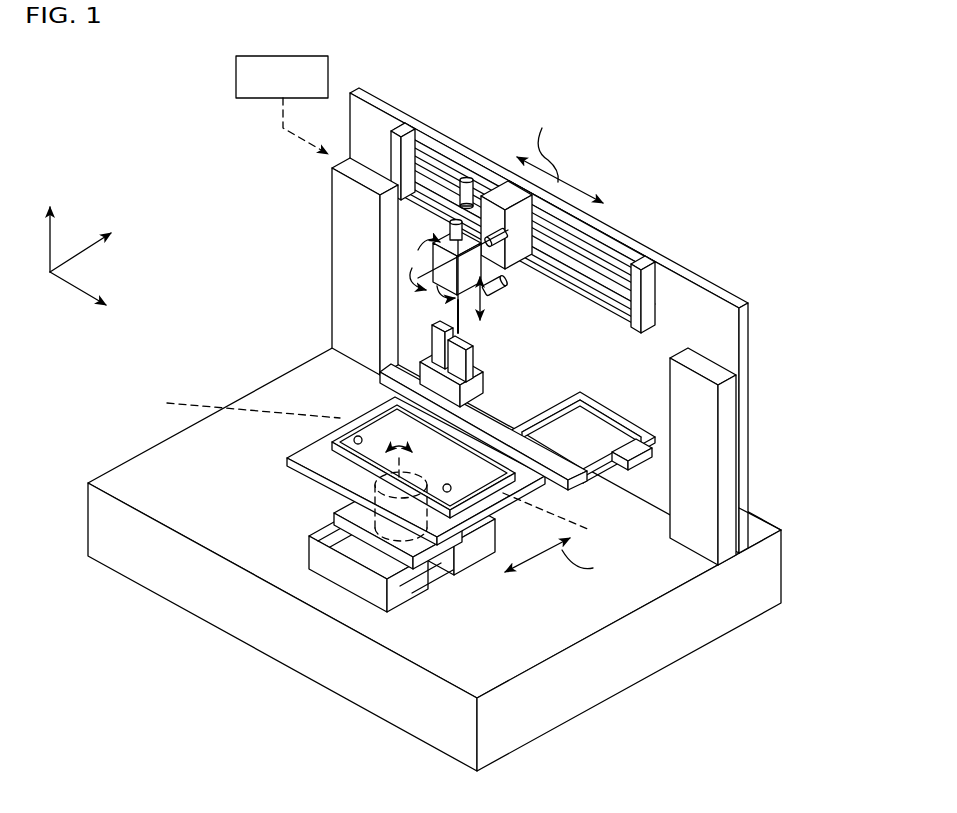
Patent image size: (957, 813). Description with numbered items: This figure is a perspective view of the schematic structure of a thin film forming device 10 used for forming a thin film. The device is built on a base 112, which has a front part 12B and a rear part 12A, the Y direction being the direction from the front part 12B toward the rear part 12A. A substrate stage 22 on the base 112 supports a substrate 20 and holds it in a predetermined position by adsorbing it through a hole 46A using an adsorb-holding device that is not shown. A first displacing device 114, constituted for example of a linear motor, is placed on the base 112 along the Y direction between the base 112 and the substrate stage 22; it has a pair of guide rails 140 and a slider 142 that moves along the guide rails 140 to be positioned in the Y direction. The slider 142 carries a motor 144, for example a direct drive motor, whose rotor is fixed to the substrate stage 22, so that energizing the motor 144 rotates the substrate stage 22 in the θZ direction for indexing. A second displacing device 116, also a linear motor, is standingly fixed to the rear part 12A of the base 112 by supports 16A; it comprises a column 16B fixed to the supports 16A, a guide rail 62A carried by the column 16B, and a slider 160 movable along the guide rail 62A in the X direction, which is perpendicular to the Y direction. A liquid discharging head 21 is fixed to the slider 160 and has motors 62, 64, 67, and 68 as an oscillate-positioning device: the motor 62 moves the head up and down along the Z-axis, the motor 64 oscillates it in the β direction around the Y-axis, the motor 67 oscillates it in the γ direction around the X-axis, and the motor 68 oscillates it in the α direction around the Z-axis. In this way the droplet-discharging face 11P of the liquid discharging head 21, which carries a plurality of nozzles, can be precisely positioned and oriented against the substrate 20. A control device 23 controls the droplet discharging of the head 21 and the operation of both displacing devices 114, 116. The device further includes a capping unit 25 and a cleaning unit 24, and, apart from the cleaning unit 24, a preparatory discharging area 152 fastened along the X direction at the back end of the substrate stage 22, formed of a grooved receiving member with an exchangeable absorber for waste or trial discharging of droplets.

The thin film forming device 10 is at (716, 184).
The droplet-discharging face 11P is at (468, 320).
The rear part of the base 12A is at (753, 530).
The front part of the base 12B is at (477, 662).
The supports 16A is at (343, 207).
The column 16B is at (717, 328).
The substrate 20 is at (378, 374).
The liquid discharging head 21 is at (430, 258).
The substrate stage 22 is at (285, 458).
The control device 23 is at (236, 77).
The cleaning unit 24 is at (420, 368).
The capping unit 25 is at (437, 338).
The hole of the substrate stage 46A is at (386, 470).
The motor 62 is at (455, 222).
The guide rail 62A is at (618, 244).
The motor 64 is at (506, 218).
The motor 67 is at (504, 288).
The motor 68 is at (466, 178).
The base 112 is at (187, 499).
The first displacing device 114 is at (665, 402).
The second displacing device 116 is at (598, 228).
The guide rails 140 is at (308, 538).
The slider 142 is at (432, 558).
The motor 144 is at (375, 517).
The preparatory discharging area 152 is at (655, 464).
The slider 160 is at (600, 226).